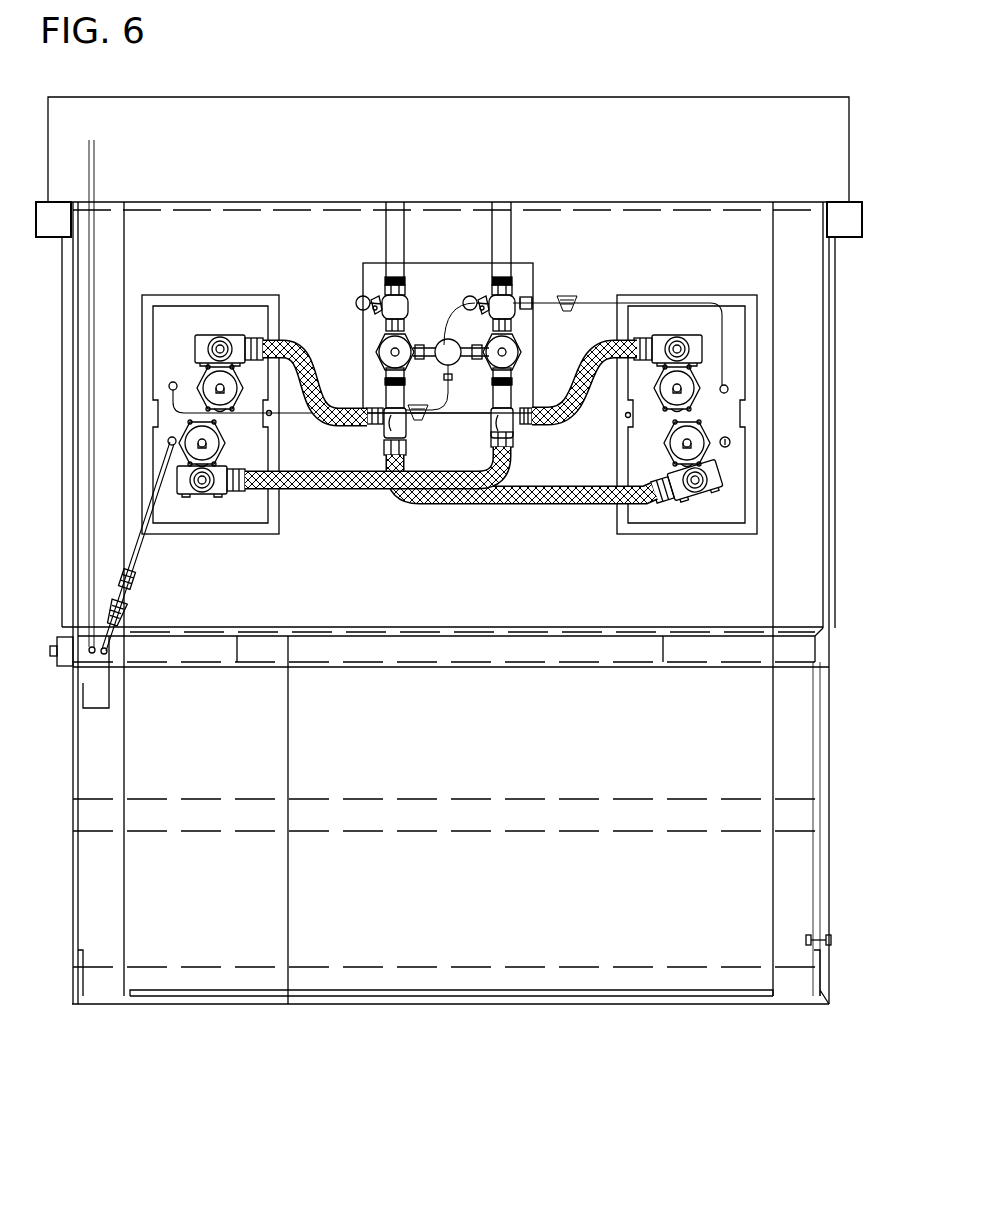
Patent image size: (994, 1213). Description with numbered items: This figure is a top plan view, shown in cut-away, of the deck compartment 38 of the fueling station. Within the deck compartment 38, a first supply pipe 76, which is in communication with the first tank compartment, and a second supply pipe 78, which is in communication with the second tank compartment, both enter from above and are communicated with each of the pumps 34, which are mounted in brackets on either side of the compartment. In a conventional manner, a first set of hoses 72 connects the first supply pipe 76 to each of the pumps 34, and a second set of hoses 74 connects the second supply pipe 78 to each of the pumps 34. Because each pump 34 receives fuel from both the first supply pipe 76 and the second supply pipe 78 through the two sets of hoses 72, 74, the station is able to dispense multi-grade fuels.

The pump 34 is at (210, 513).
The deck compartment 38 is at (848, 604).
The first set of hoses 72 is at (330, 478).
The second set of hoses 74 is at (303, 362).
The first supply pipe 76 is at (500, 245).
The second supply pipe 78 is at (400, 243).